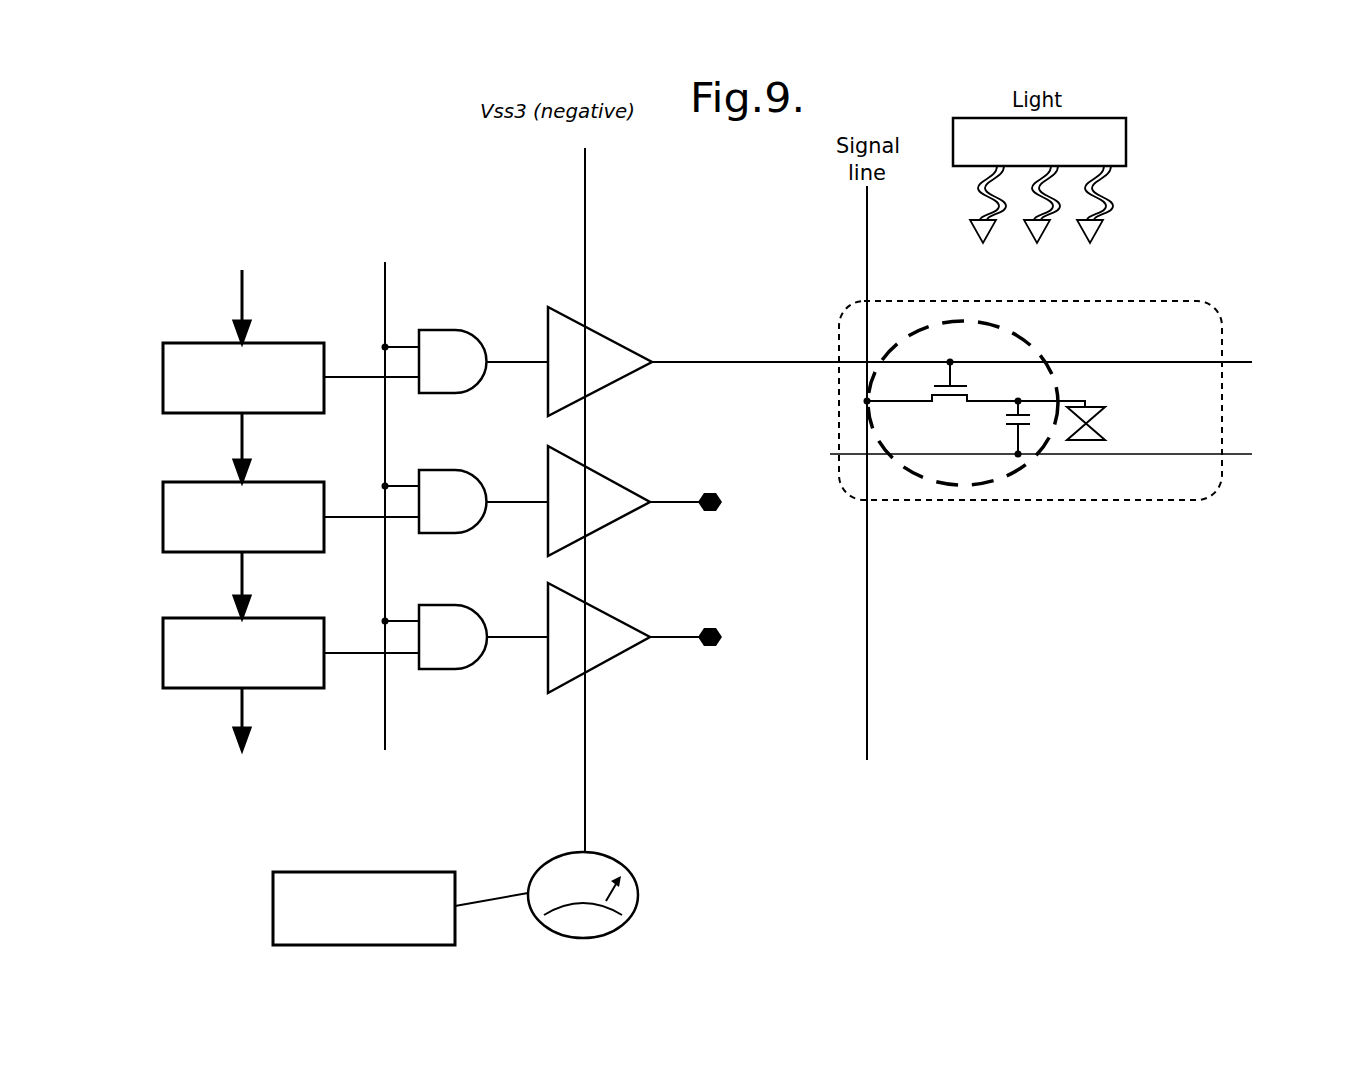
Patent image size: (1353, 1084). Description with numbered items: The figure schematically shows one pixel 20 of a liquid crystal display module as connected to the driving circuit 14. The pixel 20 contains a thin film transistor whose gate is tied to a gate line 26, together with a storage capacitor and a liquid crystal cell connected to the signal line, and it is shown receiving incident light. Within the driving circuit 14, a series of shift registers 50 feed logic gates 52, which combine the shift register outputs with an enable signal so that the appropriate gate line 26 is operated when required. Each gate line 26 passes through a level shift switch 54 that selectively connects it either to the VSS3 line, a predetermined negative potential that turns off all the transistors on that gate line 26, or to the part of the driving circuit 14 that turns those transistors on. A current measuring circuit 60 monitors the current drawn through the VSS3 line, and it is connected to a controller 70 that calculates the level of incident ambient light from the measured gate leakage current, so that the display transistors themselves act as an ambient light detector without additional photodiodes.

The driving circuit 14 is at (503, 442).
The pixel 20 is at (1197, 326).
The gate line 26 is at (808, 361).
The shift register 50 is at (189, 352).
The logic gate 52 is at (452, 338).
The level shift switch 54 is at (608, 342).
The current measuring circuit 60 is at (606, 860).
The controller 70 is at (362, 877).